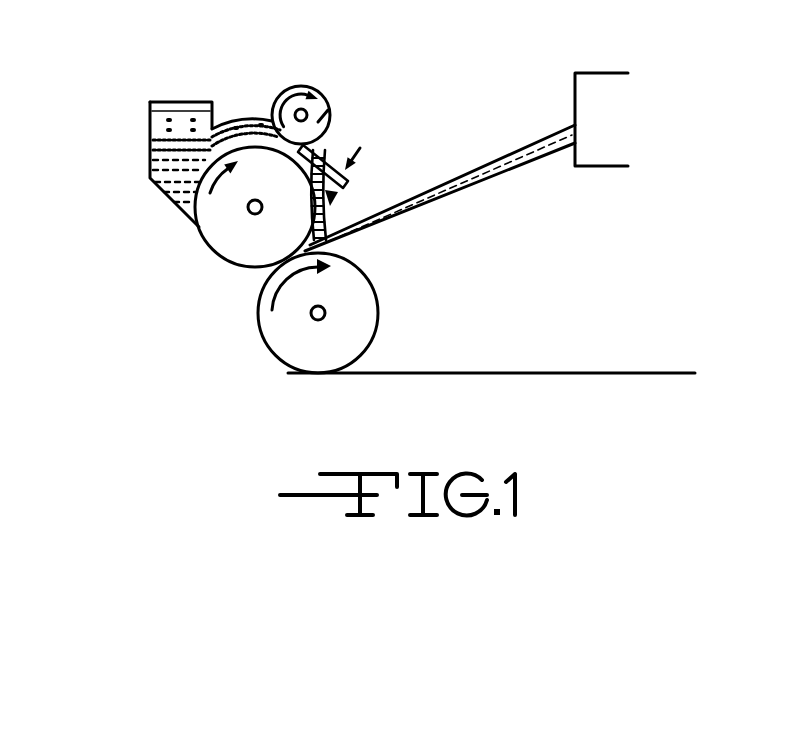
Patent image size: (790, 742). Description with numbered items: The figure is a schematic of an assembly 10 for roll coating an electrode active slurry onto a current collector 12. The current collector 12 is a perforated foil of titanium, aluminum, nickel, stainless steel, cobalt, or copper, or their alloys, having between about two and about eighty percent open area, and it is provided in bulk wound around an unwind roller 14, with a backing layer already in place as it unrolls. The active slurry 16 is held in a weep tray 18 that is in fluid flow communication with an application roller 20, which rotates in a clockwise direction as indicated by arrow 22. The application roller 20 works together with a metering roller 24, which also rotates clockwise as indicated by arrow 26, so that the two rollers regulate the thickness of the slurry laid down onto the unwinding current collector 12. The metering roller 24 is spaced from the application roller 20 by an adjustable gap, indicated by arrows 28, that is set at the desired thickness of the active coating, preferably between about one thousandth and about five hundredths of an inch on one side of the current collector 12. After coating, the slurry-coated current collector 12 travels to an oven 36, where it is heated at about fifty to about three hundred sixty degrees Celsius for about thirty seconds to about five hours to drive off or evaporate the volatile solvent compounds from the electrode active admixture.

The assembly 10 is at (457, 118).
The current collector 12 is at (487, 372).
The unwind roller 14 is at (357, 300).
The active slurry 16 is at (182, 122).
The weep tray 18 is at (148, 133).
The application roller 20 is at (230, 238).
The arrow 22 is at (232, 181).
The metering roller 24 is at (331, 103).
The arrow 26 is at (278, 92).
The arrows 28 is at (347, 188).
The oven 36 is at (598, 160).